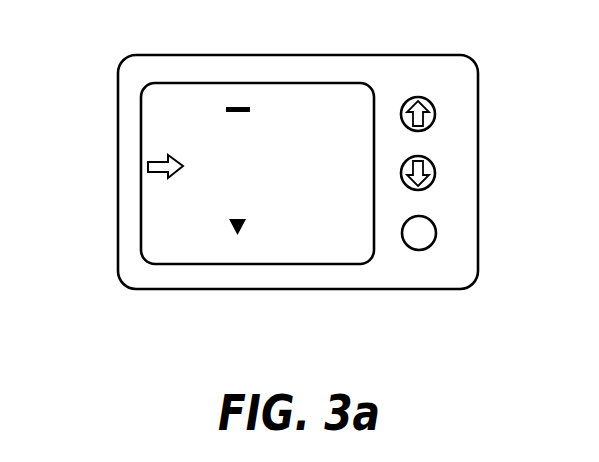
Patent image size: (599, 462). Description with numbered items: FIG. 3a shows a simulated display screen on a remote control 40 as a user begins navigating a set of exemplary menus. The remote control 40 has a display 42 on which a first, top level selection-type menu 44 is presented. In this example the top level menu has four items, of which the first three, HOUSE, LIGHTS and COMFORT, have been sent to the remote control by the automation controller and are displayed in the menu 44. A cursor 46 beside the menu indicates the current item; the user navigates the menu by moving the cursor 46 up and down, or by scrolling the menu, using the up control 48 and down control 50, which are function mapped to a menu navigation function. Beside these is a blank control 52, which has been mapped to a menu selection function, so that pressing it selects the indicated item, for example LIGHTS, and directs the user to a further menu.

The remote control 40 is at (187, 63).
The display 42 is at (153, 108).
The top level selection-type menu 44 is at (190, 208).
The cursor 46 is at (148, 166).
The up control 48 is at (435, 105).
The down control 50 is at (435, 164).
The blank control 52 is at (432, 242).